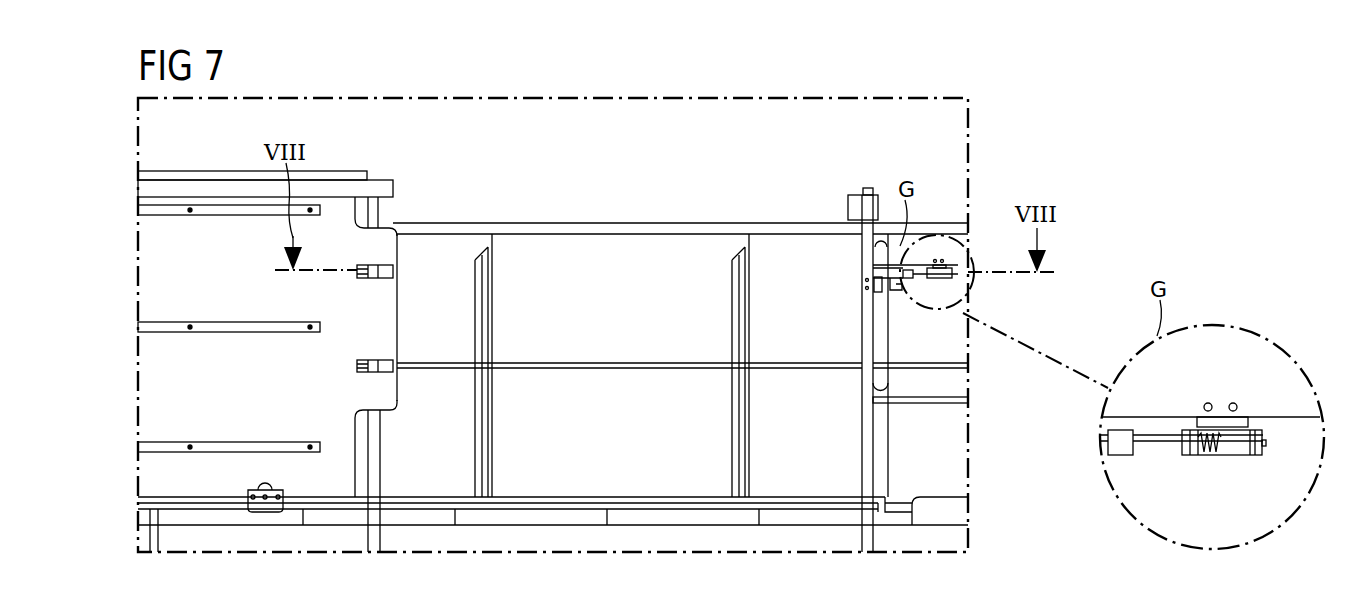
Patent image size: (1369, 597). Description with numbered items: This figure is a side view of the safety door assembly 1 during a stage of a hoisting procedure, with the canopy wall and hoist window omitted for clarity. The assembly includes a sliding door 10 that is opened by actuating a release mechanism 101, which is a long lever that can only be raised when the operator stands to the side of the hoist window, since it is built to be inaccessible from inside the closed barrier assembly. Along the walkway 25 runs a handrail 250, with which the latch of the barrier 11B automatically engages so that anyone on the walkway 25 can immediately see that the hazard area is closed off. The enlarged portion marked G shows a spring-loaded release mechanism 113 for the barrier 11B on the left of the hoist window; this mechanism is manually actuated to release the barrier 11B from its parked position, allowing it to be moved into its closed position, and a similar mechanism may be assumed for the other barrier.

The safety door assembly 1 is at (946, 144).
The sliding door 10 is at (336, 208).
The release mechanism 101 is at (210, 173).
The handrail 250 is at (610, 226).
The barrier 11B is at (912, 398).
The walkway 25 is at (934, 505).
The spring-loaded release mechanism 113 is at (953, 289).